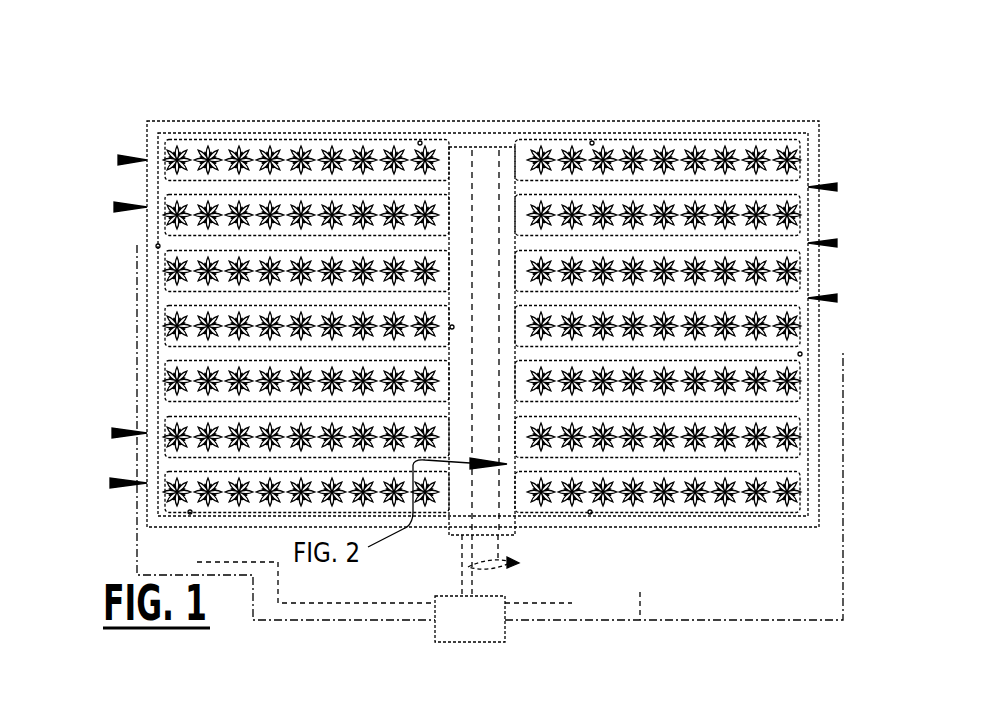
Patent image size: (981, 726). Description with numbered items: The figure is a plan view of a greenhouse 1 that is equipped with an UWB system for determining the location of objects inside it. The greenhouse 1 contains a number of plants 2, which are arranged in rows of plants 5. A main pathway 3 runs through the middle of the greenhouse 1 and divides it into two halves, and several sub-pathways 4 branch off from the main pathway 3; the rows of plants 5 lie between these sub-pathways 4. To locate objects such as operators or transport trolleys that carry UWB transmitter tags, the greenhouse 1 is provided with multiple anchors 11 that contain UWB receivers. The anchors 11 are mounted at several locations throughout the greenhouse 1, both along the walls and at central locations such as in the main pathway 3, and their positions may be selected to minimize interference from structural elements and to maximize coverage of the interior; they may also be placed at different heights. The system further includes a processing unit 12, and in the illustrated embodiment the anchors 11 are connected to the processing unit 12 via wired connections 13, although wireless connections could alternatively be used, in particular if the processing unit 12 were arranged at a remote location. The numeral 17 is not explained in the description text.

The greenhouse 1 is at (110, 58).
The plants 2 is at (178, 138).
The main pathway 3 is at (481, 82).
The sub-pathways 4 is at (837, 298).
The rows of plants 5 is at (114, 207).
The anchors 11 is at (420, 141).
The processing unit 12 is at (480, 637).
The wired connections 13 is at (315, 622).
The air flow 17 is at (502, 565).